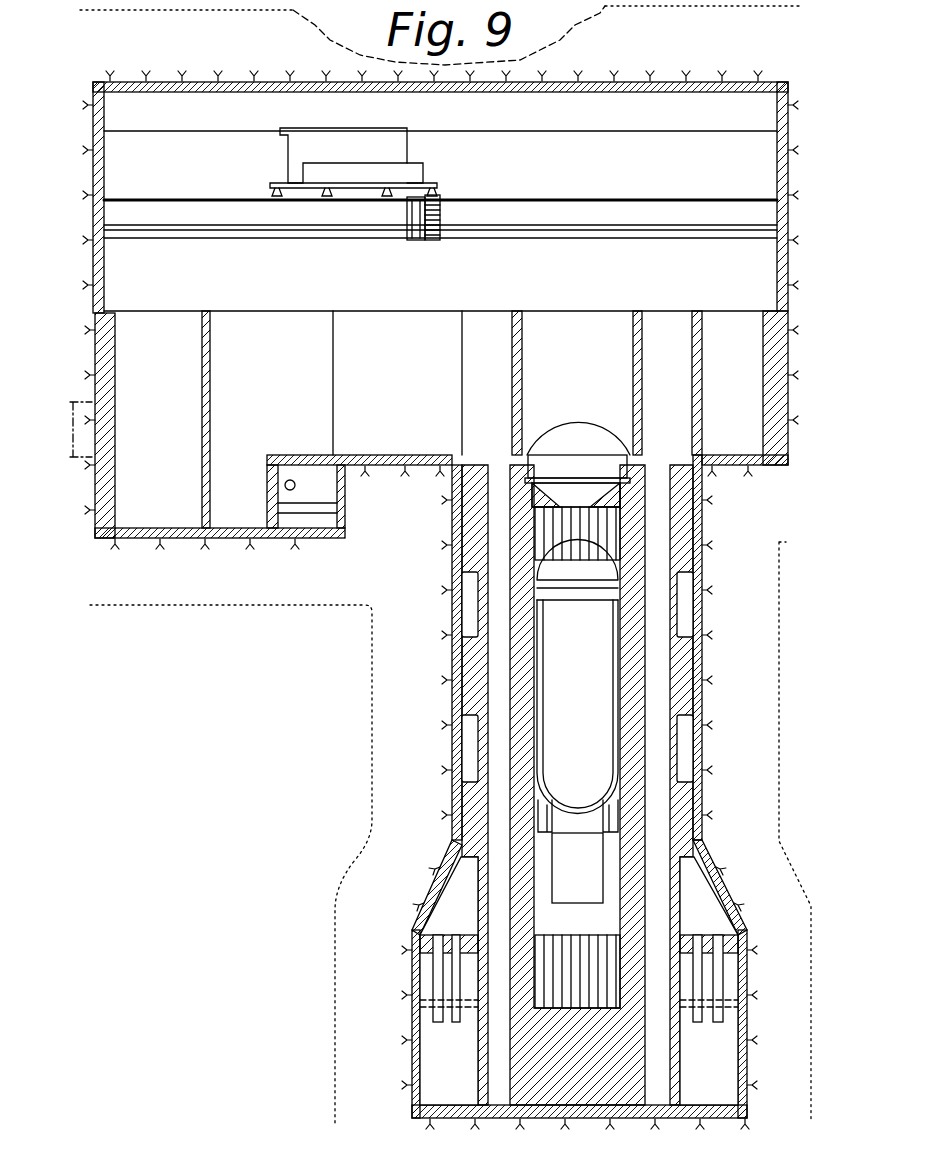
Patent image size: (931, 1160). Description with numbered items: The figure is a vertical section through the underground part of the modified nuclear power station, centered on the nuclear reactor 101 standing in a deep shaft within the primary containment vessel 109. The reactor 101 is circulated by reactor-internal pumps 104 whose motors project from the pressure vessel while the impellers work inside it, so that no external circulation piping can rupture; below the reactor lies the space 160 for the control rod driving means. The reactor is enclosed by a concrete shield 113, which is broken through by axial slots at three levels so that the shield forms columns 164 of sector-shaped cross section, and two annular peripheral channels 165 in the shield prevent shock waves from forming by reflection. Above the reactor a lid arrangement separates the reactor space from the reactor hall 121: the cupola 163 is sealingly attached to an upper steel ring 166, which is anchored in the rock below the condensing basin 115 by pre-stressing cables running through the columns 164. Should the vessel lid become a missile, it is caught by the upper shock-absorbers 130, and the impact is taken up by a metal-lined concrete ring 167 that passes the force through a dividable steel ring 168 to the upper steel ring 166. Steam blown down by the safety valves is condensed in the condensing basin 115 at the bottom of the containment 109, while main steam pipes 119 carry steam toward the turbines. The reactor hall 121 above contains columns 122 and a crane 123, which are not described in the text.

The nuclear reactor 101 is at (577, 677).
The reactor-internal pumps 104 is at (546, 822).
The primary containment vessel 109 is at (716, 886).
The concrete shield 113 is at (690, 812).
The condensing basin 115 is at (720, 1063).
The main steam pipes 119 is at (288, 484).
The reactor hall 121 is at (440, 221).
The columns 122 is at (230, 327).
The crane 123 is at (410, 186).
The upper shock-absorbers 130 is at (600, 533).
The space for control rod driving means 160 is at (572, 896).
The cupola 163 is at (582, 424).
The columns 164 is at (690, 678).
The annular peripheral channels 165 is at (690, 603).
The upper steel ring 166 is at (530, 472).
The metal-lined concrete ring 167 is at (612, 504).
The dividable steel ring 168 is at (622, 484).